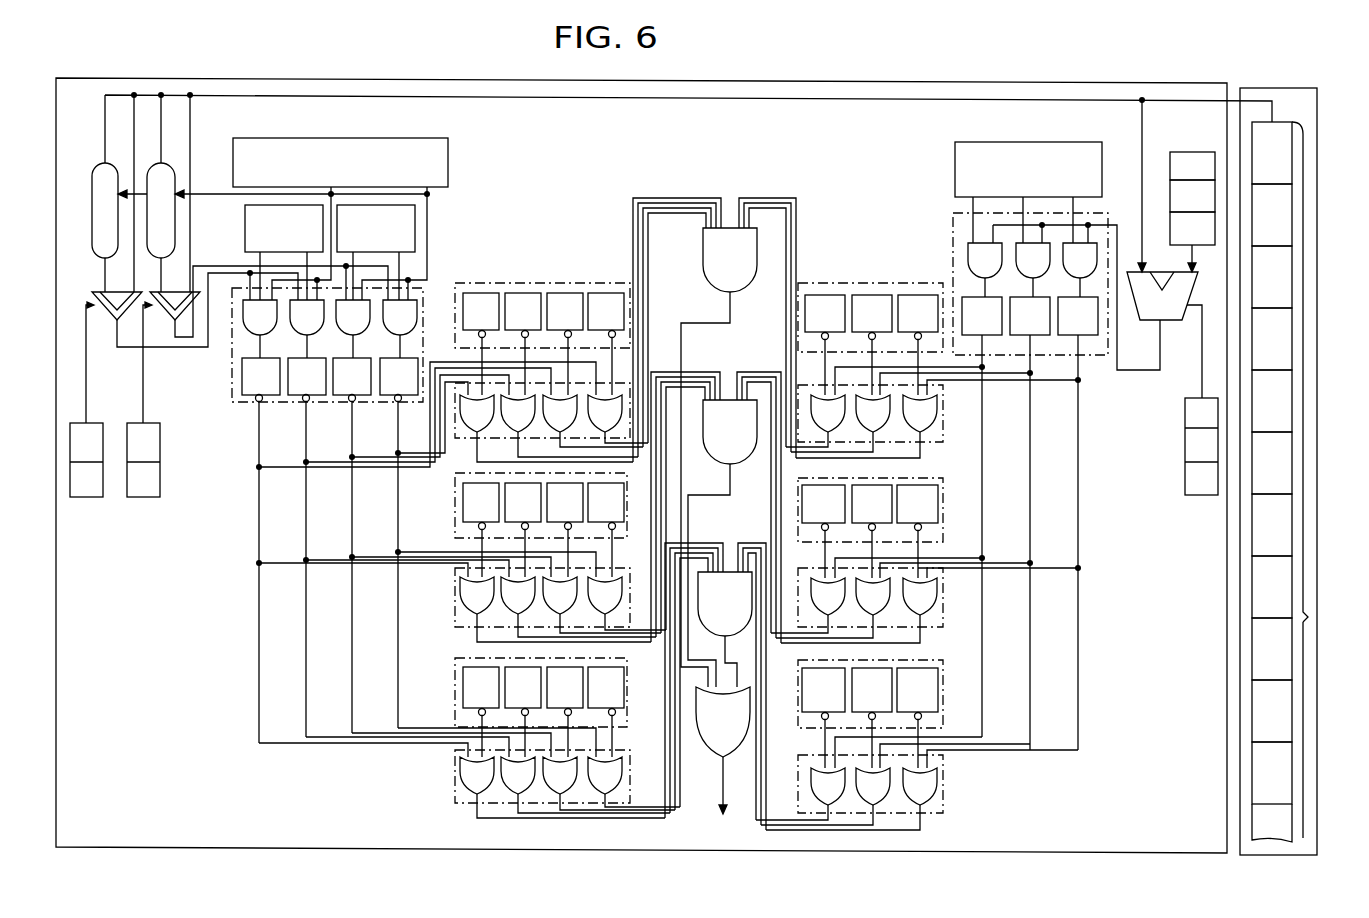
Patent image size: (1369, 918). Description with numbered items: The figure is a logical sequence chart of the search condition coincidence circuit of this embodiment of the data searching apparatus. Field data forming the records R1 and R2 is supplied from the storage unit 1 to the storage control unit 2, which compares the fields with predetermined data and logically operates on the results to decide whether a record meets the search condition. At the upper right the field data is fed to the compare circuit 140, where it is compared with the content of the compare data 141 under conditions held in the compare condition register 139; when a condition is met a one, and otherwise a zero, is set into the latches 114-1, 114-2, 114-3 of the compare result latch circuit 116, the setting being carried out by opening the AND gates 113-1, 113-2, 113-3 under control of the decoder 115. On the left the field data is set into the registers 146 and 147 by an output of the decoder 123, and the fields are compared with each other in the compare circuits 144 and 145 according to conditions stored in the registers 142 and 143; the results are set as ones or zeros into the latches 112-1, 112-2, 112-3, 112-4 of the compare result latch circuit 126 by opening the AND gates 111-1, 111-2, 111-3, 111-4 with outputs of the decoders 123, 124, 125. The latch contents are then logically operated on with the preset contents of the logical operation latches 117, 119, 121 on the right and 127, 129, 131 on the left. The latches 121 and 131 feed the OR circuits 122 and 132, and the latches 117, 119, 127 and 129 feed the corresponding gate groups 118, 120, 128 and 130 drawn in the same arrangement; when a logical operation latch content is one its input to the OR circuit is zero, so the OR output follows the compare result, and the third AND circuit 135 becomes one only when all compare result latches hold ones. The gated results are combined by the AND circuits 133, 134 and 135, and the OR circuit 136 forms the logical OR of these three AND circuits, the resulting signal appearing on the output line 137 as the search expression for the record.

The storage unit 1 is at (1262, 88).
The storage control unit 2 is at (1135, 82).
The record R1 is at (1303, 370).
The record R2 is at (1303, 785).
The AND gate 111-1 is at (387, 329).
The AND gate 111-2 is at (338, 329).
The AND gate 111-3 is at (292, 337).
The AND gate 111-4 is at (250, 292).
The latch 112-1 is at (384, 543).
The latch 112-2 is at (336, 545).
The latch 112-3 is at (290, 547).
The latch 112-4 is at (244, 550).
The AND gate 113-1 is at (1098, 248).
The AND gate 113-2 is at (1018, 240).
The AND gate 113-3 is at (975, 250).
The latch 114-1 is at (1088, 336).
The latch 114-2 is at (1040, 336).
The latch 114-3 is at (992, 336).
The decoder 115 is at (955, 166).
The compare result latch circuit 116 is at (953, 215).
The logical operation latch 117 is at (810, 283).
The OR gate group 118 is at (943, 405).
The logical operation latch 119 is at (943, 518).
The OR gate group 120 is at (943, 590).
The logical operation latch 121 is at (943, 705).
The OR circuit 122 is at (943, 798).
The decoder 123 is at (400, 138).
The decoder 124 is at (415, 226).
The decoder 125 is at (246, 214).
The compare result latch circuit 126 is at (232, 382).
The logical operation latch 127 is at (540, 283).
The OR gate group 128 is at (458, 440).
The logical operation latch 129 is at (458, 530).
The OR gate group 130 is at (456, 588).
The logical operation latch 131 is at (457, 685).
The OR circuit 132 is at (457, 782).
The AND circuit 133 is at (704, 290).
The AND circuit 134 is at (738, 464).
The AND circuit 135 is at (705, 630).
The OR circuit 136 is at (705, 745).
The output line 137 is at (721, 800).
The compare condition register 139 is at (1186, 478).
The compare circuit 140 is at (1164, 321).
The compare data 141 is at (1198, 152).
The register 142 is at (144, 497).
The register 143 is at (86, 497).
The compare circuit 144 is at (172, 322).
The compare circuit 145 is at (94, 296).
The register 146 is at (233, 160).
The register 147 is at (98, 168).